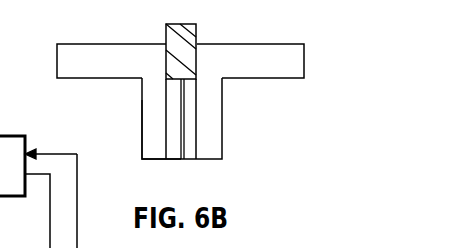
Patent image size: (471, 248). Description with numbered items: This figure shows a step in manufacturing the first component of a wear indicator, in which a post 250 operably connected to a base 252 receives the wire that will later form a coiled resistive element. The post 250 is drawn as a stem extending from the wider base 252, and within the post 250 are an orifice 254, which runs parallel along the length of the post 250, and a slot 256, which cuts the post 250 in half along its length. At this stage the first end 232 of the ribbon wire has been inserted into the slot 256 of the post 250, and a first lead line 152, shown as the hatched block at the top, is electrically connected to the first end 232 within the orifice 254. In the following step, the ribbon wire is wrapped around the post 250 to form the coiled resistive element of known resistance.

The first lead line 152 is at (184, 44).
The base 252 is at (285, 62).
The post 250 is at (192, 83).
The first end 232 is at (185, 112).
The slot 256 is at (172, 153).
The orifice 254 is at (181, 162).